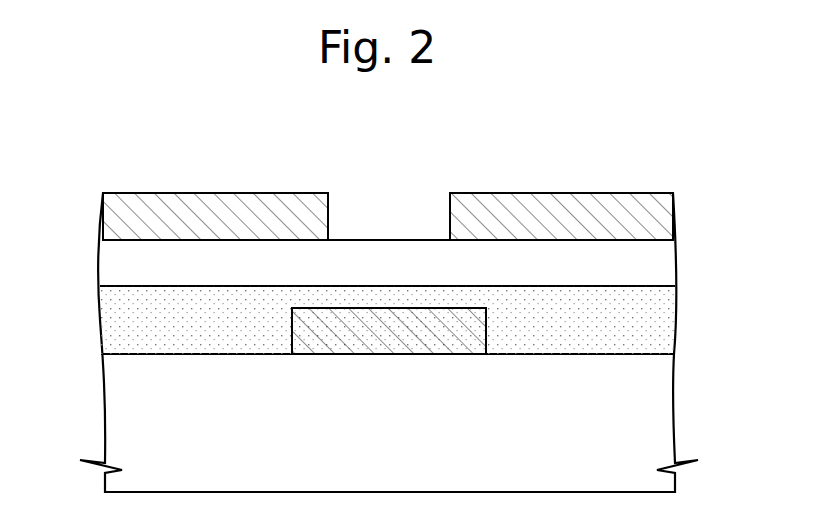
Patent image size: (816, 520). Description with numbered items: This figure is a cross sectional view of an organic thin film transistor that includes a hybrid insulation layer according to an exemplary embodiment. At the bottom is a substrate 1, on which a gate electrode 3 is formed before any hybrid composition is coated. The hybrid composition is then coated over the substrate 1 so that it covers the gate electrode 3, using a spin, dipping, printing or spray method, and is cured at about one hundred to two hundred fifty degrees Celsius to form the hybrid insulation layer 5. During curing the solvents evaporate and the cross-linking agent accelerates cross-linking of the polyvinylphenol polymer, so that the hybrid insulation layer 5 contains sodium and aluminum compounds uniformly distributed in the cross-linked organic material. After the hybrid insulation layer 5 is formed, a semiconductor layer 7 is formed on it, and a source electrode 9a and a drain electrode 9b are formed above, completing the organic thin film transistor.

The substrate 1 is at (657, 414).
The gate electrode 3 is at (389, 340).
The hybrid insulation layer 5 is at (657, 320).
The semiconductor layer 7 is at (657, 265).
The source electrode 9a is at (657, 218).
The drain electrode 9b is at (120, 216).